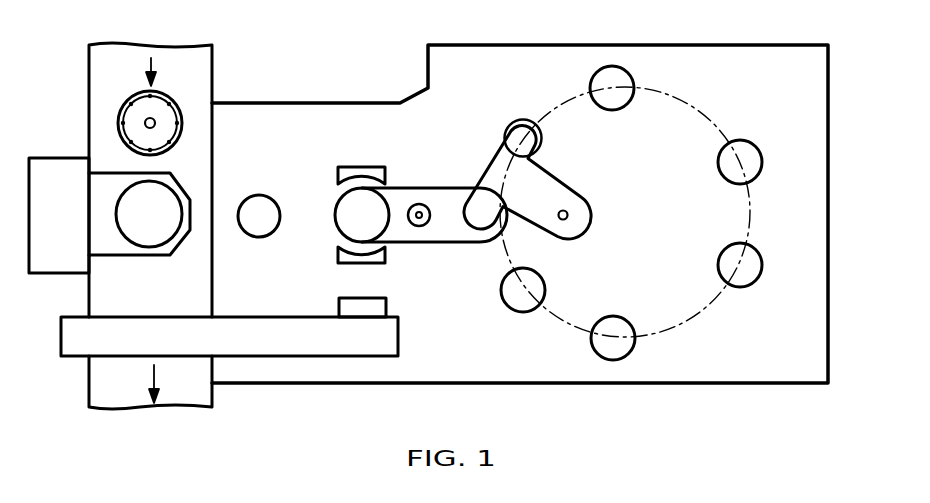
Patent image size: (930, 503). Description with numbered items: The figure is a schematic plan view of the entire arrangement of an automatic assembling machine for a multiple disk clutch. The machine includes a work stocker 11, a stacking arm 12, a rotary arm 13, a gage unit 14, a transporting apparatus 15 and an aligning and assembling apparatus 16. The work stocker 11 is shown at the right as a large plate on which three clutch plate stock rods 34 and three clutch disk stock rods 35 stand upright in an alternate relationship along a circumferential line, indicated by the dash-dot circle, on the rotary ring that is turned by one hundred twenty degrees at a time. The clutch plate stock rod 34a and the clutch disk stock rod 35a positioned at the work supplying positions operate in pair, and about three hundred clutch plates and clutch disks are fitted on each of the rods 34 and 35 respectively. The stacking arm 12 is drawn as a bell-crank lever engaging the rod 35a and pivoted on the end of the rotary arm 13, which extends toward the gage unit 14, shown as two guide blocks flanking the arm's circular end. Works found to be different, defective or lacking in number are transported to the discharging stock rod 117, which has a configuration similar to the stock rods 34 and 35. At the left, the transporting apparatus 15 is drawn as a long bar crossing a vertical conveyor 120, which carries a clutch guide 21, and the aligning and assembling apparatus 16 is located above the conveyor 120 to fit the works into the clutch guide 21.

The work stocker 11 is at (688, 98).
The conveyor 120 is at (195, 45).
The clutch guide 21 is at (128, 102).
The aligning and assembling apparatus 16 is at (143, 260).
The discharging stock rod 117 is at (253, 194).
The transporting apparatus 15 is at (266, 316).
The gage unit 14 is at (358, 166).
The rotary arm 13 is at (420, 188).
The stacking arm 12 is at (492, 170).
The clutch disk stock rod 35a is at (518, 120).
The clutch plate stock rods 34 is at (612, 64).
The clutch disk stock rods 35 is at (741, 140).
The clutch plate stock rod 34a is at (509, 305).